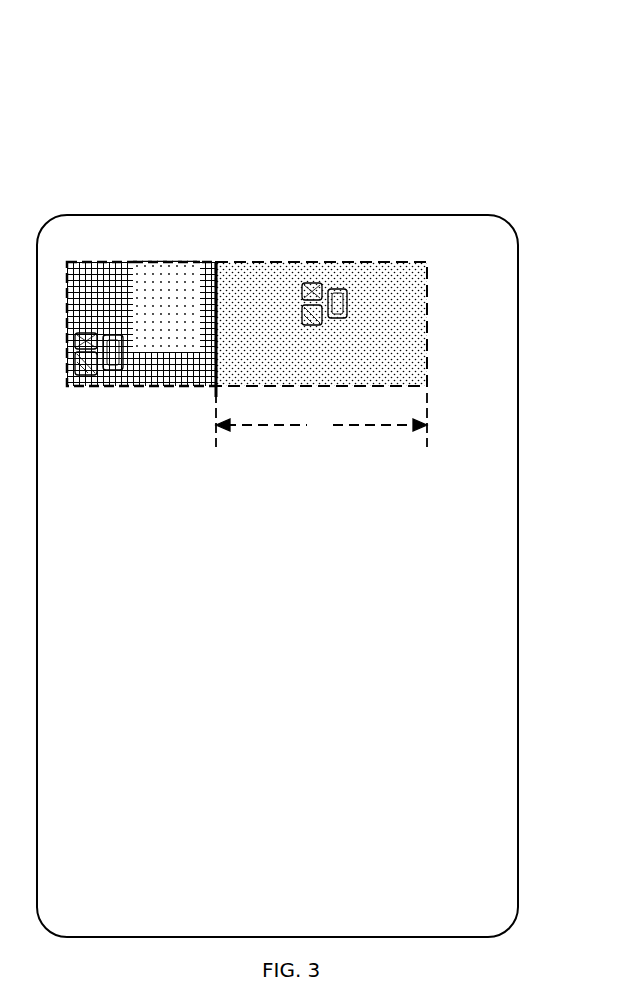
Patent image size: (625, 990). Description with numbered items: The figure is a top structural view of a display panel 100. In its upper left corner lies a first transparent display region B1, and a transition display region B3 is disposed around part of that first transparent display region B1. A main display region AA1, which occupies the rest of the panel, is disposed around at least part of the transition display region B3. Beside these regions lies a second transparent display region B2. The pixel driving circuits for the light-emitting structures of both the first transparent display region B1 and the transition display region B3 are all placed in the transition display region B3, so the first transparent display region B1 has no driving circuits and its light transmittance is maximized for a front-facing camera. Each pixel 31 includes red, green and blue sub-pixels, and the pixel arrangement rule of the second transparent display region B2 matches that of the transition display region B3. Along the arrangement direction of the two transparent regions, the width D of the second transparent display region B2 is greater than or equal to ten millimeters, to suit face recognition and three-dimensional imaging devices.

The display panel 100 is at (412, 103).
The pixel 31 is at (93, 322).
The transition display region B3 is at (122, 272).
The first transparent display region B1 is at (178, 270).
The second transparent display region B2 is at (368, 275).
The main display region AA1 is at (277, 576).
The width of the second transparent display region D is at (321, 420).